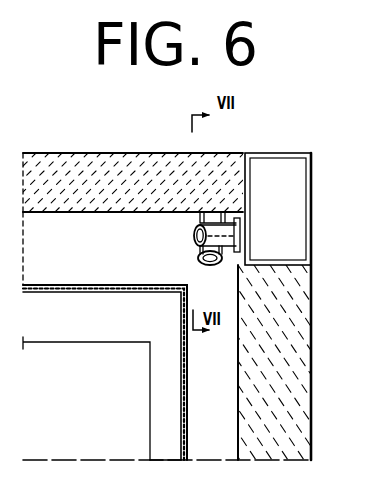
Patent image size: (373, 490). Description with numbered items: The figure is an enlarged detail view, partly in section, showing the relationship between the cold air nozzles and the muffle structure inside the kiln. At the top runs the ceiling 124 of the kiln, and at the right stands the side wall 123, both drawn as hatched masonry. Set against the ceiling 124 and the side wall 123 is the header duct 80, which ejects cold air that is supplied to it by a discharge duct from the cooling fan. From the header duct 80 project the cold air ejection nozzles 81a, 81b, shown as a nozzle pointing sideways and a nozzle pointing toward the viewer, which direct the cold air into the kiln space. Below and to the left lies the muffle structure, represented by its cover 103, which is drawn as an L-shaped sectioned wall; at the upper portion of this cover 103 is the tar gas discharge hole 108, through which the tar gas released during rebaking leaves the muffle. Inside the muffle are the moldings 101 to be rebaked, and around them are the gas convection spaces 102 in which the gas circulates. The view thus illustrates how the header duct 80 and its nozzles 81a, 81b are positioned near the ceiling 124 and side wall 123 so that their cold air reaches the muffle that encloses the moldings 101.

The header duct 80 is at (292, 212).
The cold air ejection nozzle 81a is at (212, 222).
The cold air ejection nozzle 81b is at (224, 226).
The moldings 101 is at (138, 384).
The gas convection spaces 102 is at (165, 427).
The cover 103 is at (73, 285).
The tar gas discharge hole 108 is at (122, 285).
The side wall 123 is at (290, 294).
The ceiling 124 is at (103, 168).